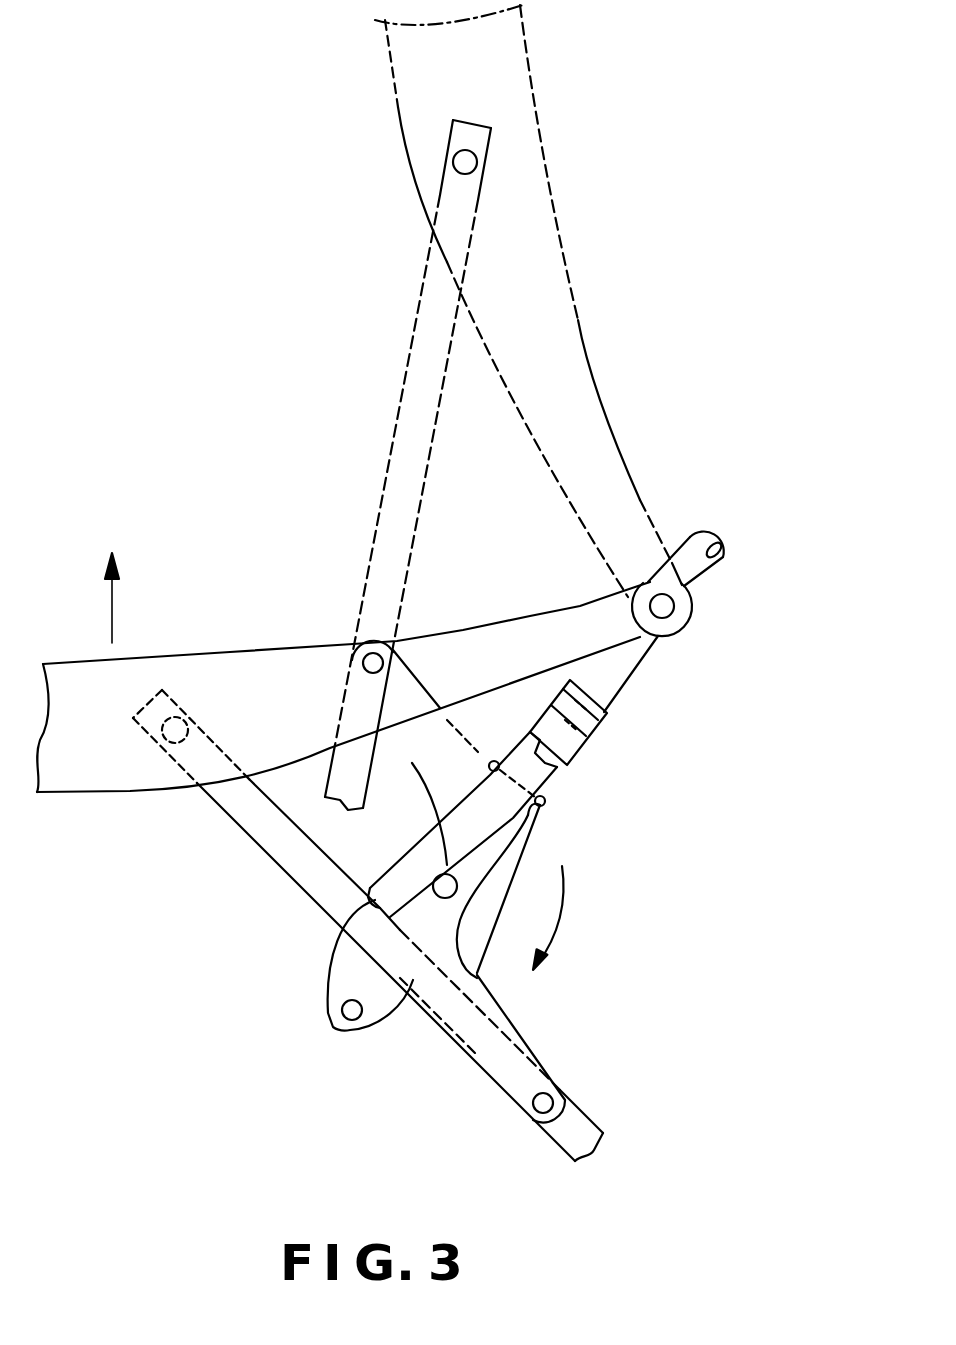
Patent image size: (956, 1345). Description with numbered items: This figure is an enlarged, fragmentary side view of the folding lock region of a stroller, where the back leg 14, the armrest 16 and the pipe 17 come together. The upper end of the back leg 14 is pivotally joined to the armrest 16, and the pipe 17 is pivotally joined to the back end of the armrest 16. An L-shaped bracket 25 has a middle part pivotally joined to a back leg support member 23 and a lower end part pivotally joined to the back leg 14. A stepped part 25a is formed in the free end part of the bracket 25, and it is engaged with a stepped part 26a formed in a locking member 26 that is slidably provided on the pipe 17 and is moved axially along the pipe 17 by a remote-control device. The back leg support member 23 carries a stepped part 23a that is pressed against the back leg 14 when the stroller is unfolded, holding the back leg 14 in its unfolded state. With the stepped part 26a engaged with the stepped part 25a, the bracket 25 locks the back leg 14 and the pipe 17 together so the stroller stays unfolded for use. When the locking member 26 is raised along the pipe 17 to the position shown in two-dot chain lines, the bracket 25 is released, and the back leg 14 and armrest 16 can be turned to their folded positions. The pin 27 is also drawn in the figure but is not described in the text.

The back leg 14 is at (278, 848).
The armrest 16 is at (208, 662).
The pipe 17 is at (697, 573).
The back leg support member 23 is at (483, 885).
The stepped part 23a is at (378, 908).
The L-shaped bracket 25 is at (493, 993).
The stepped part 25a is at (560, 770).
The locking member 26 is at (582, 740).
The stepped part 26a is at (530, 738).
The pin 27 is at (367, 1030).